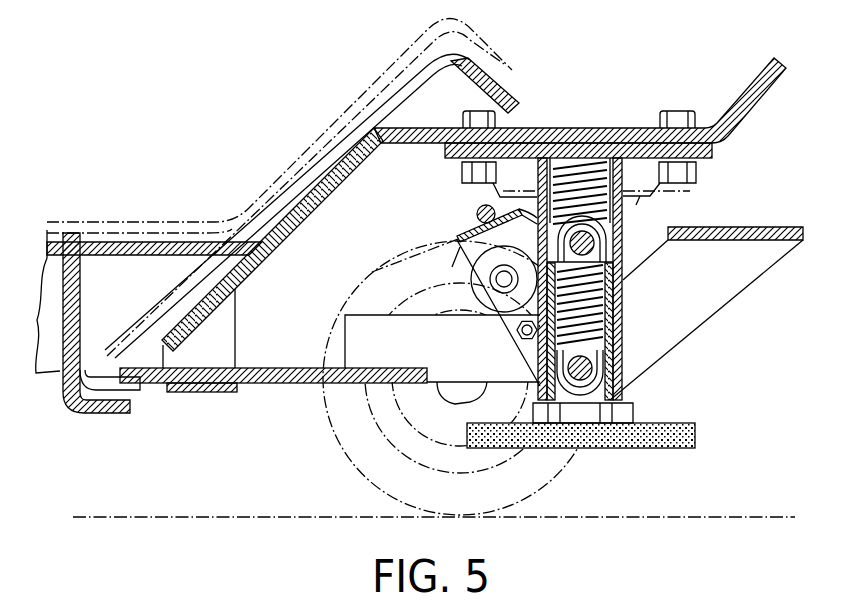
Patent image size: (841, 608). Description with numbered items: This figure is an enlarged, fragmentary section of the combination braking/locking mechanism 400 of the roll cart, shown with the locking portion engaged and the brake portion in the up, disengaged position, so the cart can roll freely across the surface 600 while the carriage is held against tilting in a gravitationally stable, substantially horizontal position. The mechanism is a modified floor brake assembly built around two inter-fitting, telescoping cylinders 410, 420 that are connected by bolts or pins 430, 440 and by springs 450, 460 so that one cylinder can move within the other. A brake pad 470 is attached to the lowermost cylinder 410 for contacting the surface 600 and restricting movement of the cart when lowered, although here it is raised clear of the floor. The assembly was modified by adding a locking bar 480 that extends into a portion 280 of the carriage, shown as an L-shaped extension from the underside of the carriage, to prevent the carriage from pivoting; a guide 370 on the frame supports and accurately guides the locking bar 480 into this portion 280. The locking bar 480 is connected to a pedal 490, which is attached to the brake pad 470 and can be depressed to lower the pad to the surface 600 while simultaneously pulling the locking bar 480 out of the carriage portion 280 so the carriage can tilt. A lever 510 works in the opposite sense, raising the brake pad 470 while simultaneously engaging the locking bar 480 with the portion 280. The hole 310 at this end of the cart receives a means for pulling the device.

The portion of the carriage 280 is at (112, 415).
The hole 310 is at (763, 83).
The guide 370 is at (235, 340).
The combination braking/locking mechanism 400 is at (740, 343).
The telescoping cylinder 410 is at (617, 375).
The telescoping cylinder 420 is at (645, 222).
The bolt or pin 430 is at (605, 360).
The bolt or pin 440 is at (623, 253).
The spring 450 is at (623, 302).
The spring 460 is at (585, 135).
The brake pad 470 is at (657, 448).
The locking bar 480 is at (292, 387).
The pedal 490 is at (740, 227).
The lever 510 is at (477, 210).
The surface 600 is at (283, 510).